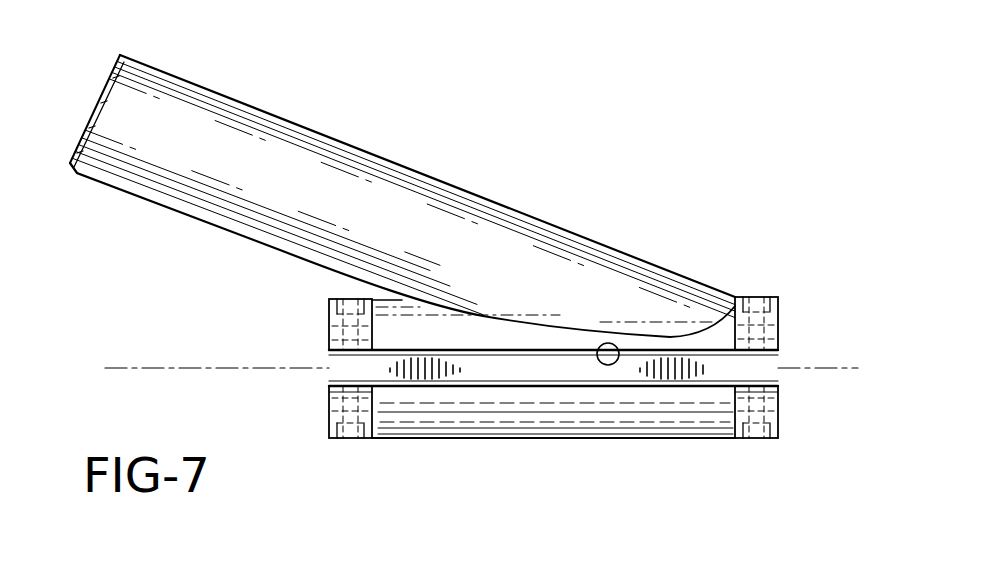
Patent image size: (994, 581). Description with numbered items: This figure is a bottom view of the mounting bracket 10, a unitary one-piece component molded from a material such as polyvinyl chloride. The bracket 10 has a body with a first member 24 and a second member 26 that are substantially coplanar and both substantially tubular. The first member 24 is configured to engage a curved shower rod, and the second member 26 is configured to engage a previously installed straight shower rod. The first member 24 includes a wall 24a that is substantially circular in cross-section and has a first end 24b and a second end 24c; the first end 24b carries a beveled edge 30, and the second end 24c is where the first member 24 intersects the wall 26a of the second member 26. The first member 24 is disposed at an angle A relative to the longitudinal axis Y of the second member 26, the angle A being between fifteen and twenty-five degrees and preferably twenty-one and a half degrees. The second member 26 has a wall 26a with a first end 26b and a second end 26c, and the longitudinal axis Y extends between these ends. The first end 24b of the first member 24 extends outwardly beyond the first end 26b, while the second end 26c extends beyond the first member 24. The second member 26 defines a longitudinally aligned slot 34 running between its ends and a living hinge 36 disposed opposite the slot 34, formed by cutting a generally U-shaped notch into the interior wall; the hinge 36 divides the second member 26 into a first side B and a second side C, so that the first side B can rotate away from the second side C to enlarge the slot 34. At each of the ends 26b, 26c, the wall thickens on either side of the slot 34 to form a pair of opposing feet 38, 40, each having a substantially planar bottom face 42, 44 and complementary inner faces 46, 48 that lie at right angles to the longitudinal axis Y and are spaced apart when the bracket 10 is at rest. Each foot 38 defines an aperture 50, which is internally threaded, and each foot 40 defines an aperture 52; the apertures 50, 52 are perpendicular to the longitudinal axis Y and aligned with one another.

The mounting bracket 10 is at (508, 184).
The first member 24 is at (310, 128).
The wall 24a is at (355, 182).
The first end 24b is at (84, 180).
The second end 24c is at (722, 293).
The second member 26 is at (632, 442).
The wall 26a is at (586, 428).
The first end 26b is at (332, 402).
The second end 26c is at (776, 404).
The beveled edge 30 is at (118, 53).
The slot 34 is at (620, 346).
The living hinge 36 is at (548, 370).
The foot 38 is at (326, 438).
The foot 40 is at (326, 302).
The bottom face 42 is at (374, 410).
The bottom face 44 is at (336, 324).
The inner face 46 is at (332, 382).
The inner face 48 is at (332, 352).
The aperture 50 is at (352, 440).
The aperture 52 is at (352, 300).
The angle A is at (224, 235).
The first side B is at (456, 440).
The second side C is at (483, 322).
The longitudinal axis Y is at (125, 367).